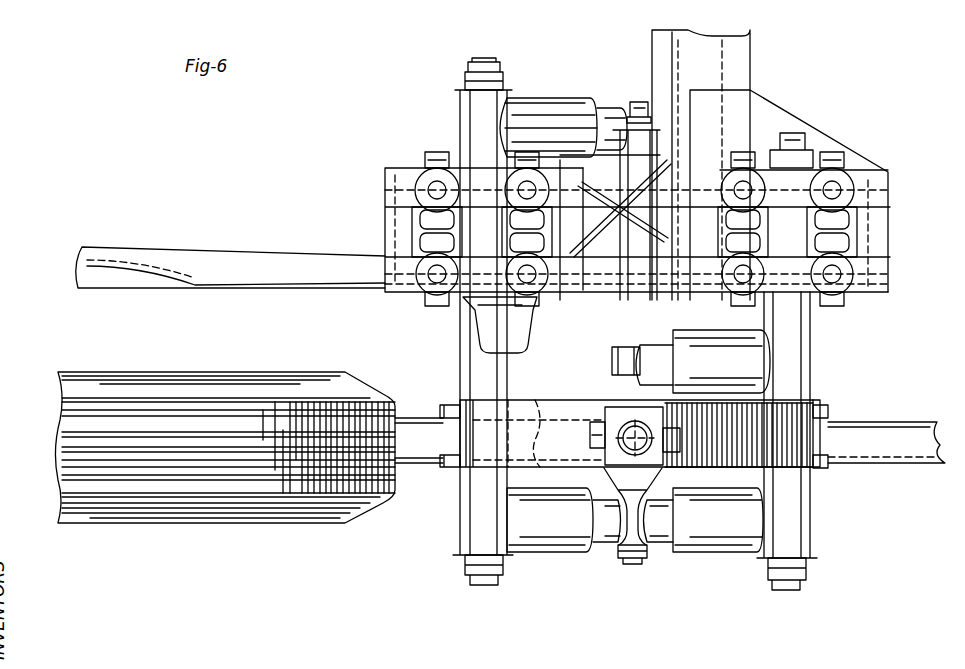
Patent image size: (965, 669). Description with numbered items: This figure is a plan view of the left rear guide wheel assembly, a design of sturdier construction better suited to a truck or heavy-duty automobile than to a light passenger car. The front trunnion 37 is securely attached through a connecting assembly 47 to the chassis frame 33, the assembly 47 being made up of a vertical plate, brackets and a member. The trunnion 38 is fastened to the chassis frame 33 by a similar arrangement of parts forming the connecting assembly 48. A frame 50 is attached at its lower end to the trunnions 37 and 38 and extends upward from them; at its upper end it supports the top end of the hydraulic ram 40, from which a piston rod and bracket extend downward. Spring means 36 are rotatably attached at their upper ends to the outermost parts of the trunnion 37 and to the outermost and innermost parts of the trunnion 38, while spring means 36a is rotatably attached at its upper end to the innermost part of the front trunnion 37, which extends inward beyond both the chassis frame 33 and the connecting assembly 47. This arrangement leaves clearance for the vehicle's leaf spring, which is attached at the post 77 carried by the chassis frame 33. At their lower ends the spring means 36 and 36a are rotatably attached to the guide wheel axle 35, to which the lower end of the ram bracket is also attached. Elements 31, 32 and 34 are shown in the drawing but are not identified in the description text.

The rod 31 is at (893, 407).
The shaft 32 is at (248, 376).
The chassis frame 33 is at (326, 265).
The sleeve beam 34 is at (556, 402).
The guide wheel axle 35 is at (636, 552).
The spring means 36 is at (532, 528).
The spring means 36a is at (590, 100).
The front trunnion 37 is at (483, 586).
The trunnion 38 is at (780, 588).
The hydraulic ram 40 is at (603, 458).
The connecting assembly 47 is at (385, 192).
The connecting assembly 48 is at (787, 112).
The frame 50 is at (797, 440).
The post 77 is at (505, 339).